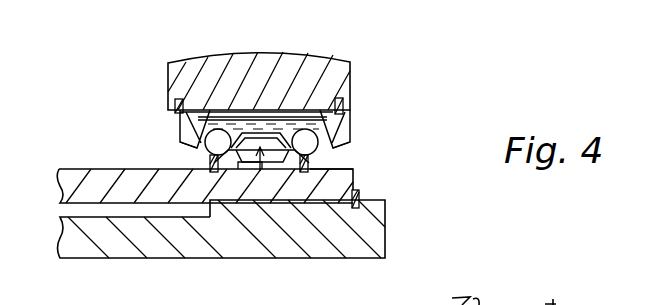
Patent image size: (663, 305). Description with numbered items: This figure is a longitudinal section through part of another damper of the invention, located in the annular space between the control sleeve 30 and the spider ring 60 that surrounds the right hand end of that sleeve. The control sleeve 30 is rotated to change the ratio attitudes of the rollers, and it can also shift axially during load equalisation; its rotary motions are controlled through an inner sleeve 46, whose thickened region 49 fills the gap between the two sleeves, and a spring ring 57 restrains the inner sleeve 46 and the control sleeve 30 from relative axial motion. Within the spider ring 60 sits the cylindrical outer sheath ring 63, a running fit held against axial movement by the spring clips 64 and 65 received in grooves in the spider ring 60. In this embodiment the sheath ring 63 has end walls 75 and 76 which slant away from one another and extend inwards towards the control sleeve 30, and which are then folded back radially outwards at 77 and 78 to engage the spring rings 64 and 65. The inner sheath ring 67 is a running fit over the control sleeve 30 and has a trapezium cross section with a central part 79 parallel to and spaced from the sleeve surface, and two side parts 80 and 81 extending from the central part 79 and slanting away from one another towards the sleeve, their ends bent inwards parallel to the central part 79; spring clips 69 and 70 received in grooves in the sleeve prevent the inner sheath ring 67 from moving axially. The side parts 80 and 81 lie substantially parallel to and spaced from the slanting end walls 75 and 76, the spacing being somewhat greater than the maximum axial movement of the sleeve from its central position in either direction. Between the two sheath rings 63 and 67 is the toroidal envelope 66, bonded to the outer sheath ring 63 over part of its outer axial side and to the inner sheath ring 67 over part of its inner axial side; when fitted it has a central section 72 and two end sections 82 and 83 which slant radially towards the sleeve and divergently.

The control sleeve 30 is at (72, 174).
The inner sleeve 46 is at (106, 248).
The thickened region of inner sleeve 49 is at (287, 209).
The spring ring 57 is at (359, 193).
The spider ring 60 is at (300, 62).
The outer sheath ring 63 is at (238, 131).
The spring clip 64 is at (165, 113).
The spring clip 65 is at (350, 115).
The toroidal envelope 66 is at (262, 130).
The inner sheath ring 67 is at (260, 172).
The spring clip 69 is at (207, 168).
The spring clip 70 is at (348, 168).
The central section of envelope 72 is at (213, 128).
The end wall of sheath ring 75 is at (181, 122).
The end wall of sheath ring 76 is at (308, 125).
The folded-back portion of end wall 77 is at (186, 143).
The folded-back portion of end wall 78 is at (342, 136).
The central part of sheath ring 79 is at (256, 130).
The side part of sheath ring 80 is at (236, 163).
The side part of sheath ring 81 is at (312, 156).
The end section of envelope 82 is at (201, 107).
The end section of envelope 83 is at (346, 102).